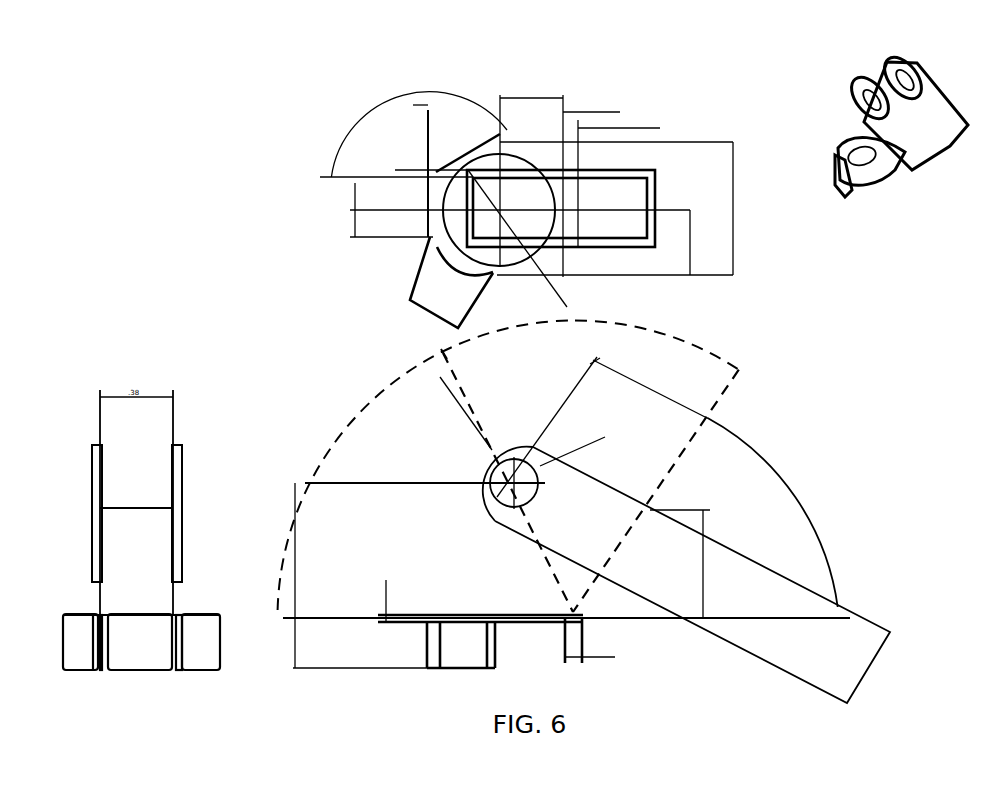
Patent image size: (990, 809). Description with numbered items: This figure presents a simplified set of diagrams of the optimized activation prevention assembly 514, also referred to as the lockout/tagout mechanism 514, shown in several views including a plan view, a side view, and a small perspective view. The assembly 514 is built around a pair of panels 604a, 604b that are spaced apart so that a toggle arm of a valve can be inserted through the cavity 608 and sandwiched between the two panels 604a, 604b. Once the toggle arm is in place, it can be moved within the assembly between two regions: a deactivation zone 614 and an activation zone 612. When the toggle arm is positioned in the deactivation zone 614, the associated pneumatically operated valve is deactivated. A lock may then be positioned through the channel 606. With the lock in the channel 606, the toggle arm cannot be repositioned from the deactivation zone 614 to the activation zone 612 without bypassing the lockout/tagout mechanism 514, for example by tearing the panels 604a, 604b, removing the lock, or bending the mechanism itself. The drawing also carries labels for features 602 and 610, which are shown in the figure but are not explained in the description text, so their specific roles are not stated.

The activation prevention assembly 514 is at (862, 125).
The bracket body 602 is at (581, 530).
The panel 604a is at (182, 474).
The panel 604b is at (100, 480).
The channel 606 is at (500, 457).
The cavity 608 is at (470, 215).
The outer arc edge 610 is at (802, 500).
The activation zone 612 is at (358, 418).
The deactivation zone 614 is at (660, 338).